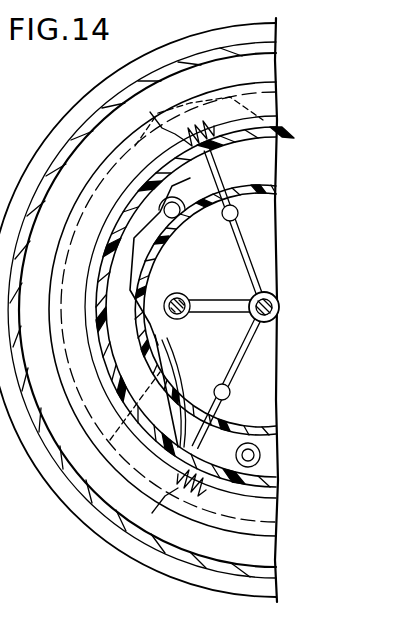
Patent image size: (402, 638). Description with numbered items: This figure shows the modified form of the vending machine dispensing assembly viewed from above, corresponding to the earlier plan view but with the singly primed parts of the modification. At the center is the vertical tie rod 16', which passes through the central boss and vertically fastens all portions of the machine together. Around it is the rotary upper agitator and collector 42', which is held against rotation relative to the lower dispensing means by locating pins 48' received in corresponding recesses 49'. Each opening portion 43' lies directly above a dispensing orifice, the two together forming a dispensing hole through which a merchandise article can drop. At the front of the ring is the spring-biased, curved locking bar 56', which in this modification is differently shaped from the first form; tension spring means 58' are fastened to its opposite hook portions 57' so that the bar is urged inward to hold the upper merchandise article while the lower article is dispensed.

The vertical tie rod 16' is at (279, 296).
The upper agitator and collector 42' is at (220, 298).
The opening portion 43' is at (170, 261).
The locating pin 48' is at (192, 294).
The recess 49' is at (226, 299).
The locking bar 56' is at (175, 388).
The hook portion 57' is at (186, 311).
The tension spring means 58' is at (206, 319).